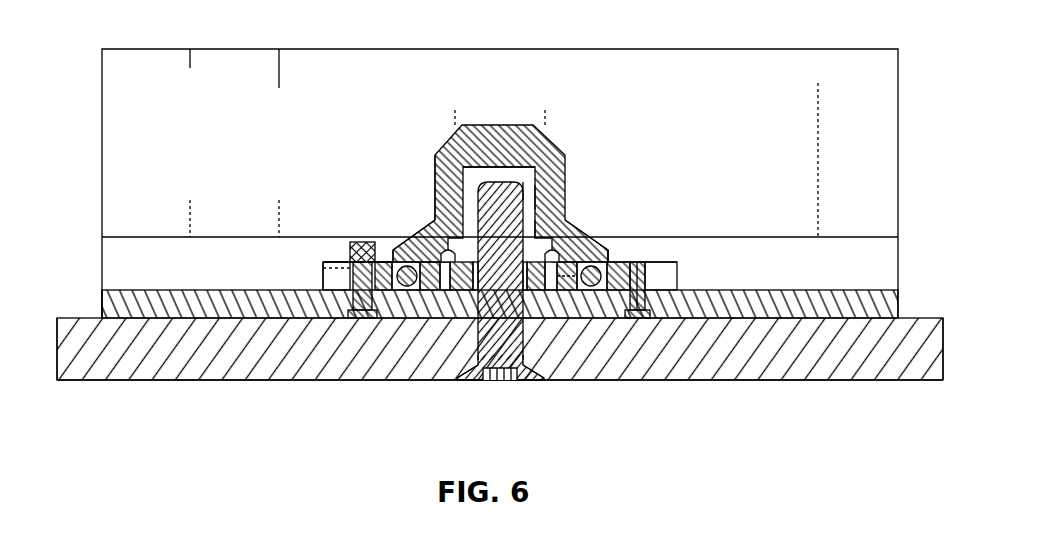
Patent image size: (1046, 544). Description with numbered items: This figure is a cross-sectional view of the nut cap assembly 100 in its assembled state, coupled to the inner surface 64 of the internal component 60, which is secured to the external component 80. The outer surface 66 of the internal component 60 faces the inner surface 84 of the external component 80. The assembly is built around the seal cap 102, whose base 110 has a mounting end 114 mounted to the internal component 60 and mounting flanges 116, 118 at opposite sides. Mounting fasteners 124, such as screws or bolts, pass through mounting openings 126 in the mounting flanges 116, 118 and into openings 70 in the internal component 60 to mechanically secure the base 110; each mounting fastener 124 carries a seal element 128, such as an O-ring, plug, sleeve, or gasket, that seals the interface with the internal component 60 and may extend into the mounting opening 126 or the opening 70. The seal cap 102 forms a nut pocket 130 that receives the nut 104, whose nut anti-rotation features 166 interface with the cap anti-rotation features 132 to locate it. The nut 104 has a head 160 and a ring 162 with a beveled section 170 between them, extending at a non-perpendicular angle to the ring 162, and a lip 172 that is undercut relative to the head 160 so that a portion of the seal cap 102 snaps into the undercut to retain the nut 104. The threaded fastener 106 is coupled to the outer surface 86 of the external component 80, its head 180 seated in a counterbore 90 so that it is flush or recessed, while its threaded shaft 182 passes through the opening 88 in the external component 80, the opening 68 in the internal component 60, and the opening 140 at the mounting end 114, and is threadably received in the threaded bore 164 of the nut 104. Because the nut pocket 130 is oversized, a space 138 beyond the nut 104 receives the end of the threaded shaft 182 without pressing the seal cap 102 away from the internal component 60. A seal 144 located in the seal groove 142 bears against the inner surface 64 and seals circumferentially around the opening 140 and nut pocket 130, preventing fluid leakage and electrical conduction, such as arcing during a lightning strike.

The nut cap assembly 100 is at (529, 159).
The internal component 60 is at (895, 170).
The inner surface 64 is at (898, 290).
The outer surface 66 is at (940, 381).
The opening 68 is at (403, 384).
The openings 70 is at (345, 302).
The external component 80 is at (845, 375).
The inner surface 84 is at (89, 318).
The outer surface 86 is at (90, 382).
The opening 88 is at (455, 379).
The counterbore 90 is at (487, 381).
The seal cap 102 is at (440, 138).
The nut 104 is at (533, 238).
The threaded fastener 106 is at (500, 184).
The base 110 is at (819, 222).
The mounting end 114 is at (323, 281).
The mounting flange 116 is at (323, 272).
The mounting flange 118 is at (678, 278).
The mounting fasteners 124 is at (344, 265).
The mounting openings 126 is at (330, 266).
The seal element 128 is at (362, 246).
The nut pocket 130 is at (519, 174).
The cap anti-rotation features 132 is at (558, 272).
The space 138 is at (489, 158).
The opening 140 is at (592, 288).
The seal groove 142 is at (400, 288).
The seal 144 is at (428, 290).
The head 160 is at (466, 217).
The ring 162 is at (438, 162).
The threaded bore 164 is at (527, 193).
The nut anti-rotation features 166 is at (632, 264).
The beveled section 170 is at (565, 258).
The lip 172 is at (610, 262).
The head 180 is at (516, 381).
The threaded shaft 182 is at (528, 332).